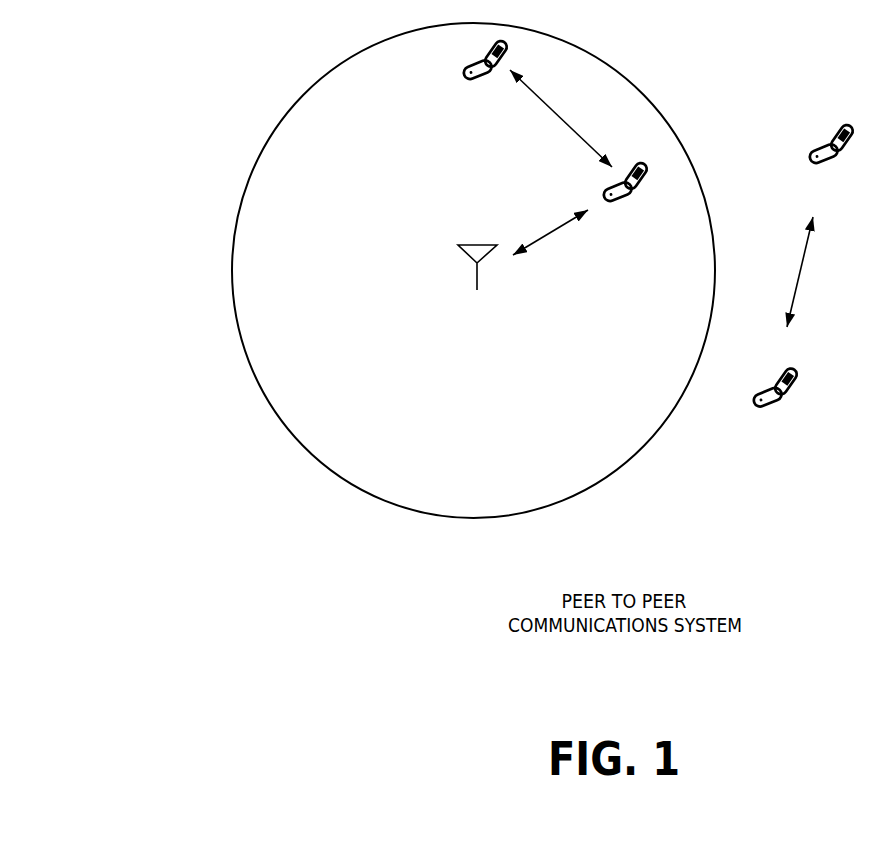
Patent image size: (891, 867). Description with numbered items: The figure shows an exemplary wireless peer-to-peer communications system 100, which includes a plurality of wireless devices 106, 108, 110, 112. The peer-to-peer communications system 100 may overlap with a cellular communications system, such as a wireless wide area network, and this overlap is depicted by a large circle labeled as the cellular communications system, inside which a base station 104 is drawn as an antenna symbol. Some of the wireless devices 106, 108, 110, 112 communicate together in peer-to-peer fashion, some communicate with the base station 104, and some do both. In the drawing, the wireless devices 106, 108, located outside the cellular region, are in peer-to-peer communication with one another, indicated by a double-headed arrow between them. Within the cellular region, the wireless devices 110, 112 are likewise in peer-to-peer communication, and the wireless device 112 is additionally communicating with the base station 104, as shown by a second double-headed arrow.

The peer-to-peer communications system 100 is at (187, 57).
The base station 104 is at (477, 286).
The wireless device 106 is at (831, 161).
The wireless device 108 is at (775, 404).
The wireless device 110 is at (485, 77).
The wireless device 112 is at (625, 199).